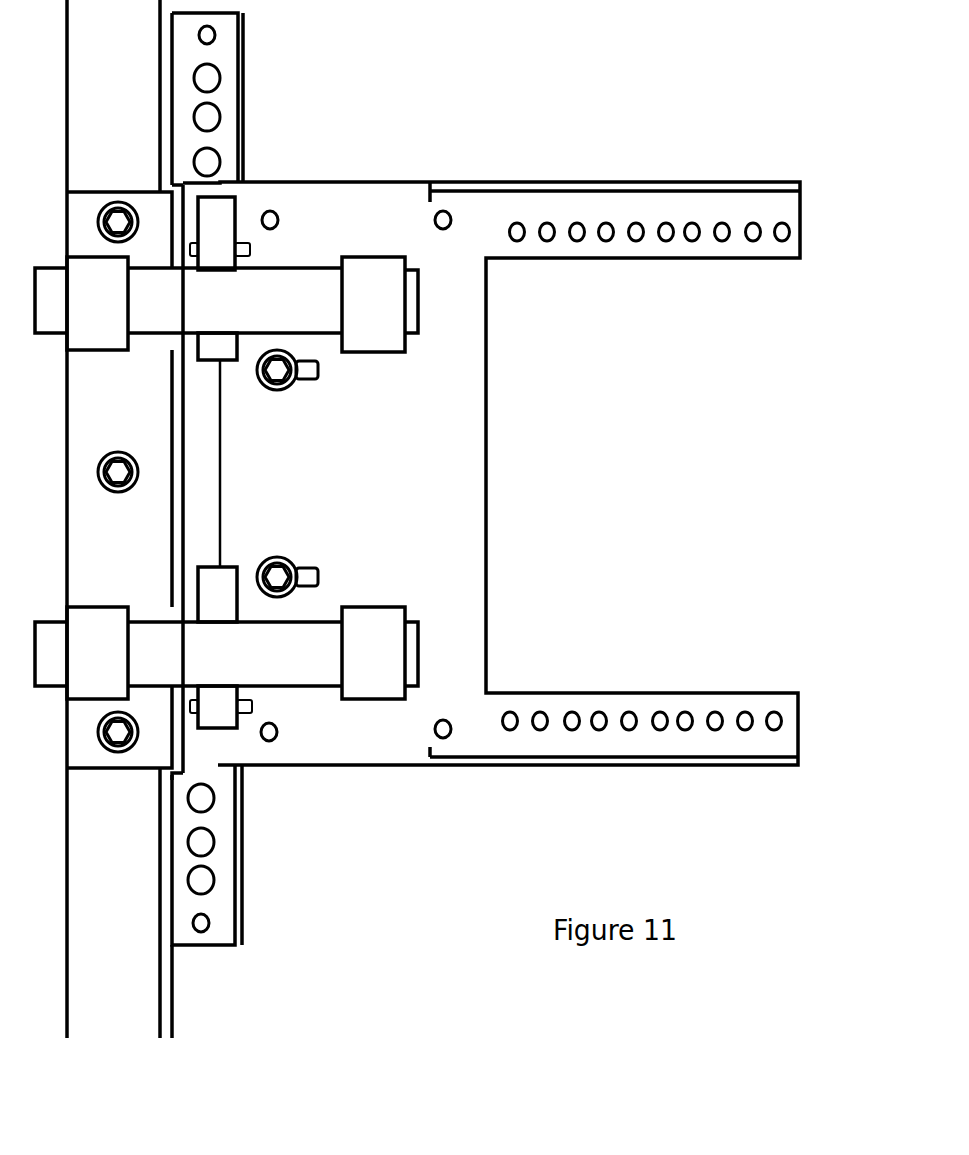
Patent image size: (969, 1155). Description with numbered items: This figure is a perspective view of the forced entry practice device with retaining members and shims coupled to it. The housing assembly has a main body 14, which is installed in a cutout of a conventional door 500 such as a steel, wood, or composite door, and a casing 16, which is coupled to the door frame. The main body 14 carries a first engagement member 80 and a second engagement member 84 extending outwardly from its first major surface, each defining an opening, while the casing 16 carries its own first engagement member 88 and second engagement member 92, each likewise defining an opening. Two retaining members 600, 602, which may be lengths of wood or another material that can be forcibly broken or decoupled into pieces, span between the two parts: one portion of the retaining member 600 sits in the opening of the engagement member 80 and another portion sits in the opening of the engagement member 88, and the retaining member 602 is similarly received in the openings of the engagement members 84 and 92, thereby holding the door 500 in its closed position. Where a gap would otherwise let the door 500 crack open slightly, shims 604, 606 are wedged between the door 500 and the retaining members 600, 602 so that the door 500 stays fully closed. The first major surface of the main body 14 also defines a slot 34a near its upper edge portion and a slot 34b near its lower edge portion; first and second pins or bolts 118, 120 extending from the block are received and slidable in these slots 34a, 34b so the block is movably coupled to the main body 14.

The door 500 is at (722, 32).
The casing 16 is at (120, 188).
The main body 14 is at (468, 333).
The retaining member 600 is at (263, 303).
The retaining member 602 is at (277, 660).
The shim 604 is at (222, 228).
The shim 606 is at (212, 700).
The first engagement member 80 is at (368, 320).
The second engagement member 84 is at (368, 657).
The first engagement member 88 is at (102, 327).
The second engagement member 92 is at (102, 653).
The slot 34a is at (321, 369).
The slot 34b is at (321, 578).
The first pin 118 is at (297, 383).
The second pin 120 is at (303, 560).